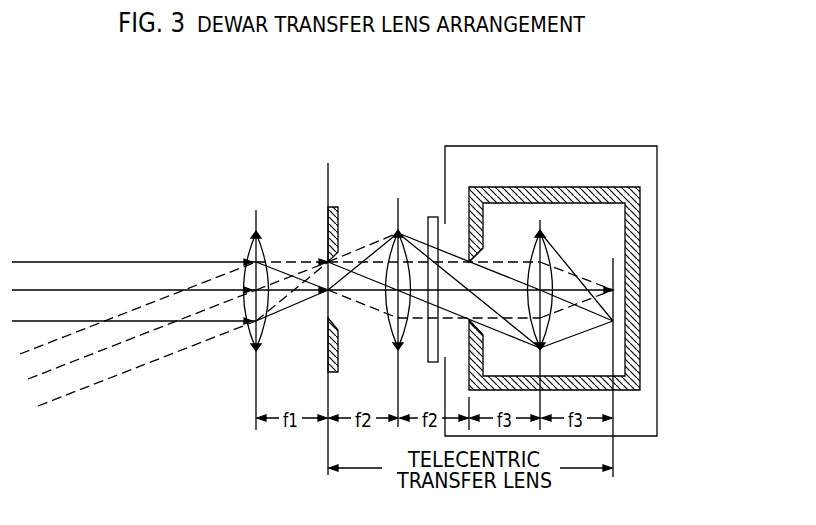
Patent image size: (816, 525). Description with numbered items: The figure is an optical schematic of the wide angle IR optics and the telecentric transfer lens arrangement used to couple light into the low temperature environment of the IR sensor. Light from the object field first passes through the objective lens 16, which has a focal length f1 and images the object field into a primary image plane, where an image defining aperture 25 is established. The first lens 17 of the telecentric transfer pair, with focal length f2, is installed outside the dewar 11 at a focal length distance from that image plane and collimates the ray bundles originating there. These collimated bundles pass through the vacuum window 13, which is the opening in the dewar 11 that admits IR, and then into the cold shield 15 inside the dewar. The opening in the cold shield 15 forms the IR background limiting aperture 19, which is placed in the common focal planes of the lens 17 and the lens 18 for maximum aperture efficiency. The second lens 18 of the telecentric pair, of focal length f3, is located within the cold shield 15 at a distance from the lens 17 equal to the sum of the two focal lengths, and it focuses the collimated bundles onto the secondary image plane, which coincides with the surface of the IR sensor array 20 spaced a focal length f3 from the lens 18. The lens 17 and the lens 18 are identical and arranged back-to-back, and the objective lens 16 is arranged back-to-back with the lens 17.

The dewar 11 is at (658, 372).
The vacuum window 13 is at (427, 214).
The cold shield 15 is at (605, 187).
The objective lens 16 is at (248, 241).
The first lens 17 is at (386, 328).
The second lens 18 is at (553, 262).
The IR background limiting aperture 19 is at (463, 272).
The IR sensor array 20 is at (610, 340).
The image defining aperture 25 is at (323, 321).